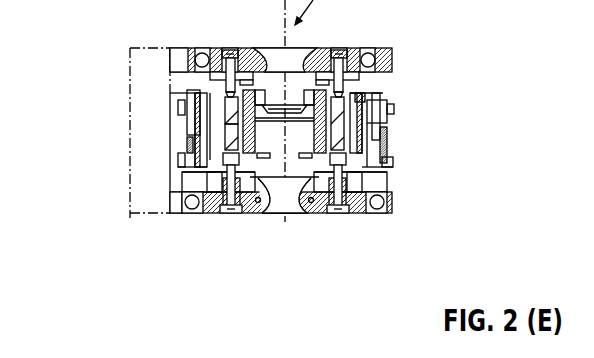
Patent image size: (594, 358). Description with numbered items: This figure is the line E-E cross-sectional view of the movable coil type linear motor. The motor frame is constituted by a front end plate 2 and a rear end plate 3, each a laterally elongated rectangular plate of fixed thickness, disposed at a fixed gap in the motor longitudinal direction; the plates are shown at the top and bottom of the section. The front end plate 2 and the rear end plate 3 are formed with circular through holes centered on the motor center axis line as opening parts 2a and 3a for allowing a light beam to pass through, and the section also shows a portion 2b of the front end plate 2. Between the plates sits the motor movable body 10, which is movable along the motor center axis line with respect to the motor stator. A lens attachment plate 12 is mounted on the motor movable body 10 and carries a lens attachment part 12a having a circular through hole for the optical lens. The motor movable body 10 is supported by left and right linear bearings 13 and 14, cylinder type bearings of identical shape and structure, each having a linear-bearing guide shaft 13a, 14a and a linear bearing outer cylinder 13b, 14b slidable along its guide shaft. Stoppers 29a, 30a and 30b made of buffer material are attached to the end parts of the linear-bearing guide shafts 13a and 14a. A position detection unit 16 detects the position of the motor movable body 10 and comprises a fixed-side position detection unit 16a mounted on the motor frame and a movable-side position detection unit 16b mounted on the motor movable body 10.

The front end plate 2 is at (395, 46).
The opening part 2a is at (272, 60).
The top plate flange 2b is at (268, 68).
The stopper 30b is at (377, 43).
The stopper 30a is at (320, 214).
The lens attachment plate 12 is at (275, 126).
The lens attachment part 12a is at (358, 94).
The linear bearing 13 is at (142, 162).
The linear-bearing guide shaft 13a is at (238, 131).
The linear bearing outer cylinder 13b is at (224, 136).
The position detection unit 16 is at (117, 139).
The fixed-side position detection unit 16a is at (148, 165).
The movable-side position detection unit 16b is at (180, 127).
The motor movable body 10 is at (433, 166).
The linear bearing 14 is at (433, 166).
The linear-bearing guide shaft 14a is at (374, 166).
The linear bearing outer cylinder 14b is at (362, 150).
The rear end plate 3 is at (296, 221).
The opening part 3a is at (294, 200).
The stopper 29a is at (271, 207).